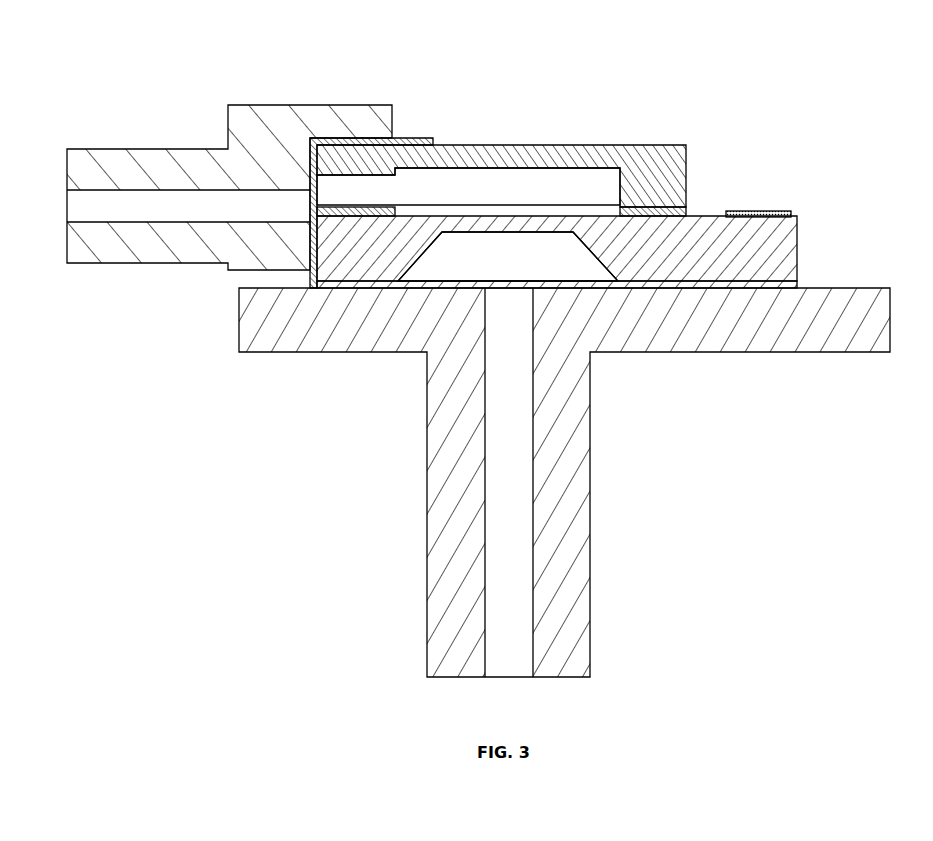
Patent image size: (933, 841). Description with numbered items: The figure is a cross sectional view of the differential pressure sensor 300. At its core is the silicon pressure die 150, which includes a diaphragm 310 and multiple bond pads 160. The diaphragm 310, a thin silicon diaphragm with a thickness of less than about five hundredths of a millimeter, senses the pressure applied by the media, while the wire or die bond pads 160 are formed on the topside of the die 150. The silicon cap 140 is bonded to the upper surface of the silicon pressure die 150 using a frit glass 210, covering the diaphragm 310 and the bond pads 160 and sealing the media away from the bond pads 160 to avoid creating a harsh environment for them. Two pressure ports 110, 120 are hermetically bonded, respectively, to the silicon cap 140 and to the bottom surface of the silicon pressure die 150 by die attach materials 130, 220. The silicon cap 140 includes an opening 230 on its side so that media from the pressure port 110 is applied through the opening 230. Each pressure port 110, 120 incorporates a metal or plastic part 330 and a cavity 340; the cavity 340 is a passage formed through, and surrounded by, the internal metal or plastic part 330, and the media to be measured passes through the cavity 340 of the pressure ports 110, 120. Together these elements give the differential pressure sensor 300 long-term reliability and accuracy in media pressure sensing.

The differential pressure sensor 300 is at (789, 73).
The pressure port 110 is at (65, 202).
The pressure port 120 is at (590, 425).
The die attach material 130 is at (407, 137).
The silicon cap 140 is at (653, 182).
The silicon pressure die 150 is at (760, 253).
The bond pads 160 is at (780, 212).
The frit glass 210 is at (670, 206).
The die attach material 220 is at (767, 277).
The opening 230 is at (375, 195).
The diaphragm 310 is at (508, 232).
The metal or plastic part 330 is at (158, 165).
The cavity 340 is at (220, 200).